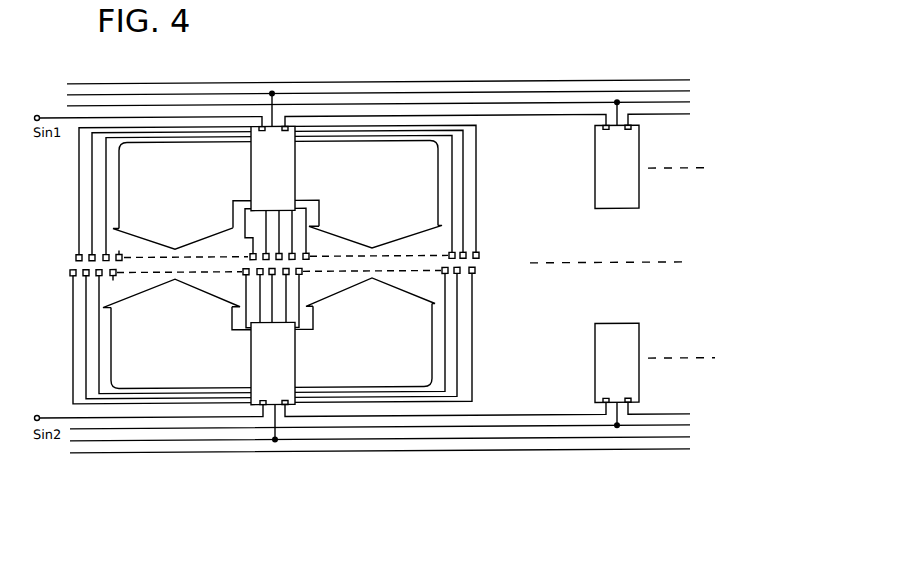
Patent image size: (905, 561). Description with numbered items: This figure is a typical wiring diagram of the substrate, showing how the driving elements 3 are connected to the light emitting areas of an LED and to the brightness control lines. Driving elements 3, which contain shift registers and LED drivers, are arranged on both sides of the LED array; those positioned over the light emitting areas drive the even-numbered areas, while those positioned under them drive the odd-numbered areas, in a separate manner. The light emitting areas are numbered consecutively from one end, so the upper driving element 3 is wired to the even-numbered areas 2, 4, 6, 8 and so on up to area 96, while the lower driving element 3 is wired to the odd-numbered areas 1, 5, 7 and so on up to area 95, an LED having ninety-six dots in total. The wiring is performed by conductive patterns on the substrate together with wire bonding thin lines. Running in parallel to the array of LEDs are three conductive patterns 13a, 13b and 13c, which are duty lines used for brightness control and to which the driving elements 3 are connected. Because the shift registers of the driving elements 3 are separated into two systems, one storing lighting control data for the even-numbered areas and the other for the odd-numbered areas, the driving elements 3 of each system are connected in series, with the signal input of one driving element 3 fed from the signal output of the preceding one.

The driving element 3 is at (272, 137).
The conductive pattern 13a is at (367, 83).
The conductive pattern 13b is at (415, 94).
The conductive pattern 13c is at (457, 105).
The light emitting area number (odd) 1 is at (68, 283).
The light emitting area number (even) 2 is at (74, 252).
The light emitting area number (even) 4 is at (89, 252).
The light emitting area number (odd) 5 is at (95, 283).
The light emitting area number (even) 6 is at (102, 252).
The light emitting area number (odd) 7 is at (109, 283).
The light emitting area number (even) 8 is at (115, 252).
The light emitting area number (odd) 95 is at (472, 281).
The light emitting area number (even) 96 is at (476, 249).